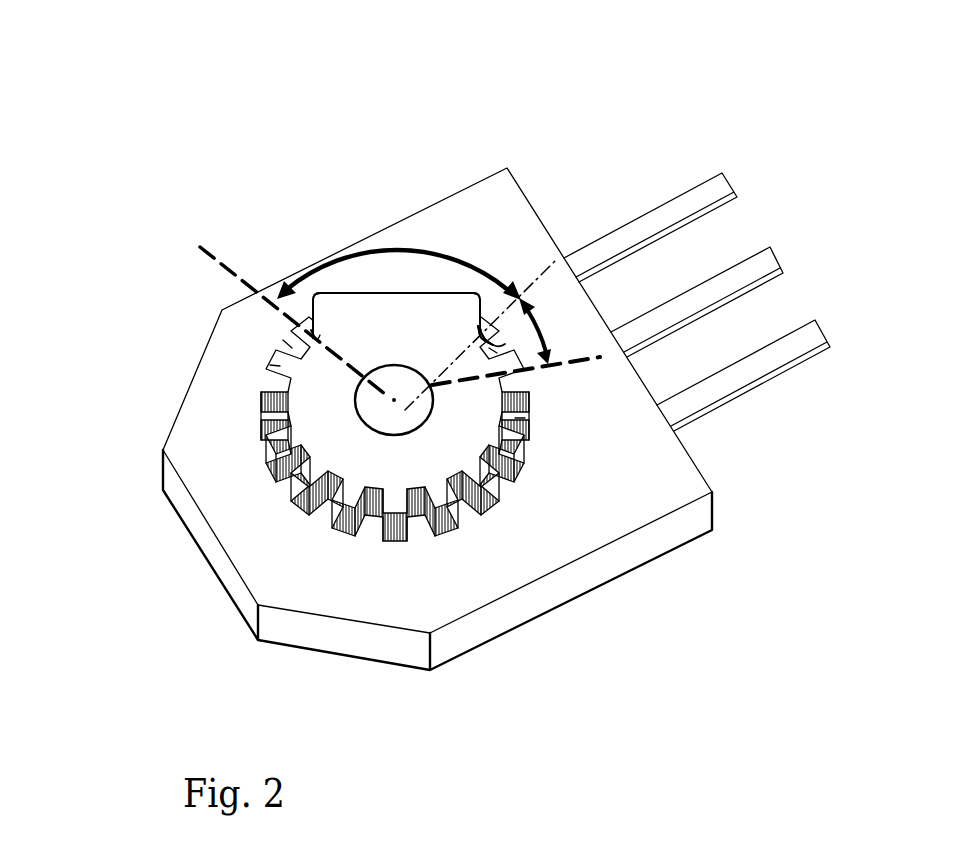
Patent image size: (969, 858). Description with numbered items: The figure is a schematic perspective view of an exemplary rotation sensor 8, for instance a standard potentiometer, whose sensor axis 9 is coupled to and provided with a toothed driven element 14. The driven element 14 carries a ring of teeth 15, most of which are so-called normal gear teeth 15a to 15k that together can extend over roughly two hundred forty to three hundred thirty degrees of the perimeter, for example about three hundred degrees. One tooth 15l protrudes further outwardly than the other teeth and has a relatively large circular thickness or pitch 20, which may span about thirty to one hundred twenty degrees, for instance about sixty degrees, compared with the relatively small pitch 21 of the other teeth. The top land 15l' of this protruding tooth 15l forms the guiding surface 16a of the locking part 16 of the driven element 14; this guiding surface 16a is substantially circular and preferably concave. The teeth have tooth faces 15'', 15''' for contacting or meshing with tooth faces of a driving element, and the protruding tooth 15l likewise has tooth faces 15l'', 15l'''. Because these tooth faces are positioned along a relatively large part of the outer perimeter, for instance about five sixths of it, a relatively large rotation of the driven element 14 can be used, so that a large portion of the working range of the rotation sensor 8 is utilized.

The rotation sensor 8 is at (197, 247).
The sensor axis 9 is at (397, 398).
The driven element 14 is at (323, 415).
The teeth 15 is at (414, 527).
The normal gear tooth 15a is at (290, 346).
The normal gear tooth 15k is at (493, 350).
The outwardly protruding tooth 15l is at (396, 234).
The locking part 16 is at (403, 233).
The top land 15l' is at (523, 232).
The guiding surface 16a is at (580, 232).
The tooth face of the outwardly protruding tooth 15l'' is at (227, 313).
The tooth face of the outwardly protruding tooth 15l''' is at (555, 280).
The tooth face 15'' is at (211, 479).
The tooth face 15''' is at (527, 496).
The pitch of the outwardly protruding tooth 20 is at (428, 296).
The pitch of the other teeth 21 is at (640, 262).